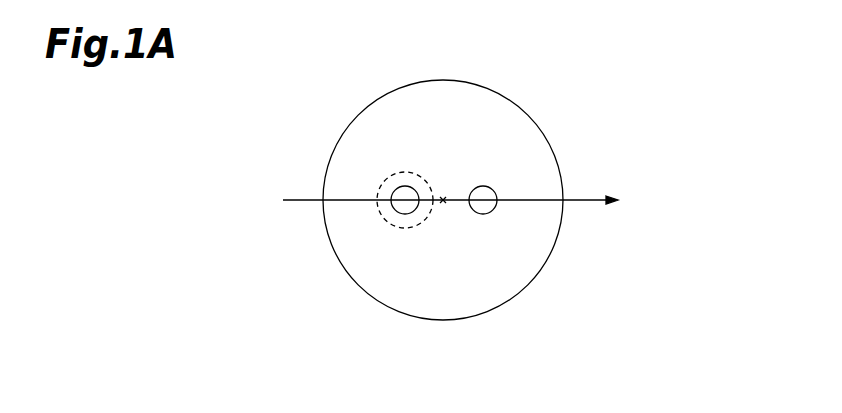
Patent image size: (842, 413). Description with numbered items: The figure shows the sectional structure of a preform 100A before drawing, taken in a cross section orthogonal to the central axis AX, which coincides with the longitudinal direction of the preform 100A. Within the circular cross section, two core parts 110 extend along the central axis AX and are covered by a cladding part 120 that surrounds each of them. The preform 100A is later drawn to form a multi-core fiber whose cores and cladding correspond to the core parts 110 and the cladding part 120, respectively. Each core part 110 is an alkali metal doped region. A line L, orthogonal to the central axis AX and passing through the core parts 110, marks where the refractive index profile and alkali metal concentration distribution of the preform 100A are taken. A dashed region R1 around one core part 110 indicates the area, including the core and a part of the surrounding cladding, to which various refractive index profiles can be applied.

The preform 100A is at (550, 126).
The cladding part 120 is at (405, 106).
The core parts 110 is at (483, 213).
The region R1 is at (387, 180).
The central axis AX is at (443, 200).
The line L is at (462, 204).